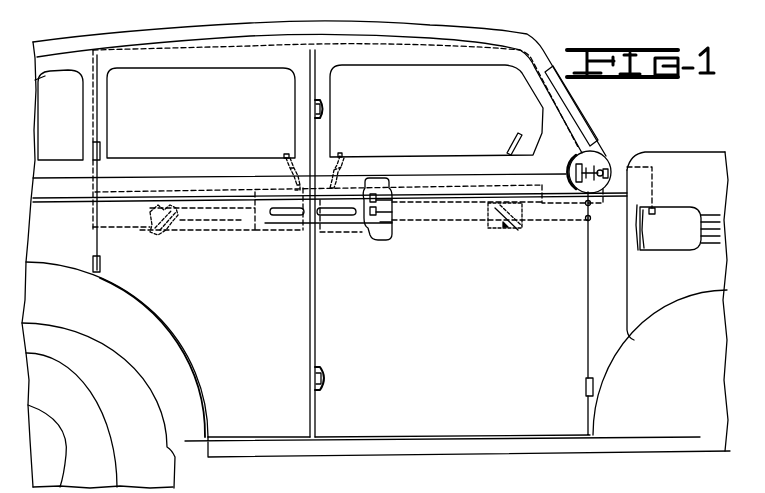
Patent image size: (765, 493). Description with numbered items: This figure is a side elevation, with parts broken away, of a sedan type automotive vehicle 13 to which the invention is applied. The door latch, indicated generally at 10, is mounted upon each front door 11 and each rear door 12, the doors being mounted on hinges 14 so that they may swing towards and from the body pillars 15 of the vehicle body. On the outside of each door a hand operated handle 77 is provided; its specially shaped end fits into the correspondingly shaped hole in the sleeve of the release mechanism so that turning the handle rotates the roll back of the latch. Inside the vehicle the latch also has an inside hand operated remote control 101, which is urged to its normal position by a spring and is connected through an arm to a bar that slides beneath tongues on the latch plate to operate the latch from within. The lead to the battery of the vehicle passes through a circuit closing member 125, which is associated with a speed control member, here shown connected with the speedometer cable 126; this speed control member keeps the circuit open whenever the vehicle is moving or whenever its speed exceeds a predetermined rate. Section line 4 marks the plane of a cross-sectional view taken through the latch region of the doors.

The automotive vehicle door latch 10 is at (378, 232).
The front door 11 is at (340, 155).
The rear door 12 is at (263, 440).
The automotive vehicle 13 is at (540, 54).
The hinges 14 is at (93, 262).
The body pillars 15 is at (312, 385).
The hand operated handle 77 is at (293, 214).
The inside hand operated remote control 101 is at (512, 230).
The circuit closing member 125 is at (594, 166).
The speedometer cable 126 is at (610, 168).
The section line 4- 4 is at (265, 222).